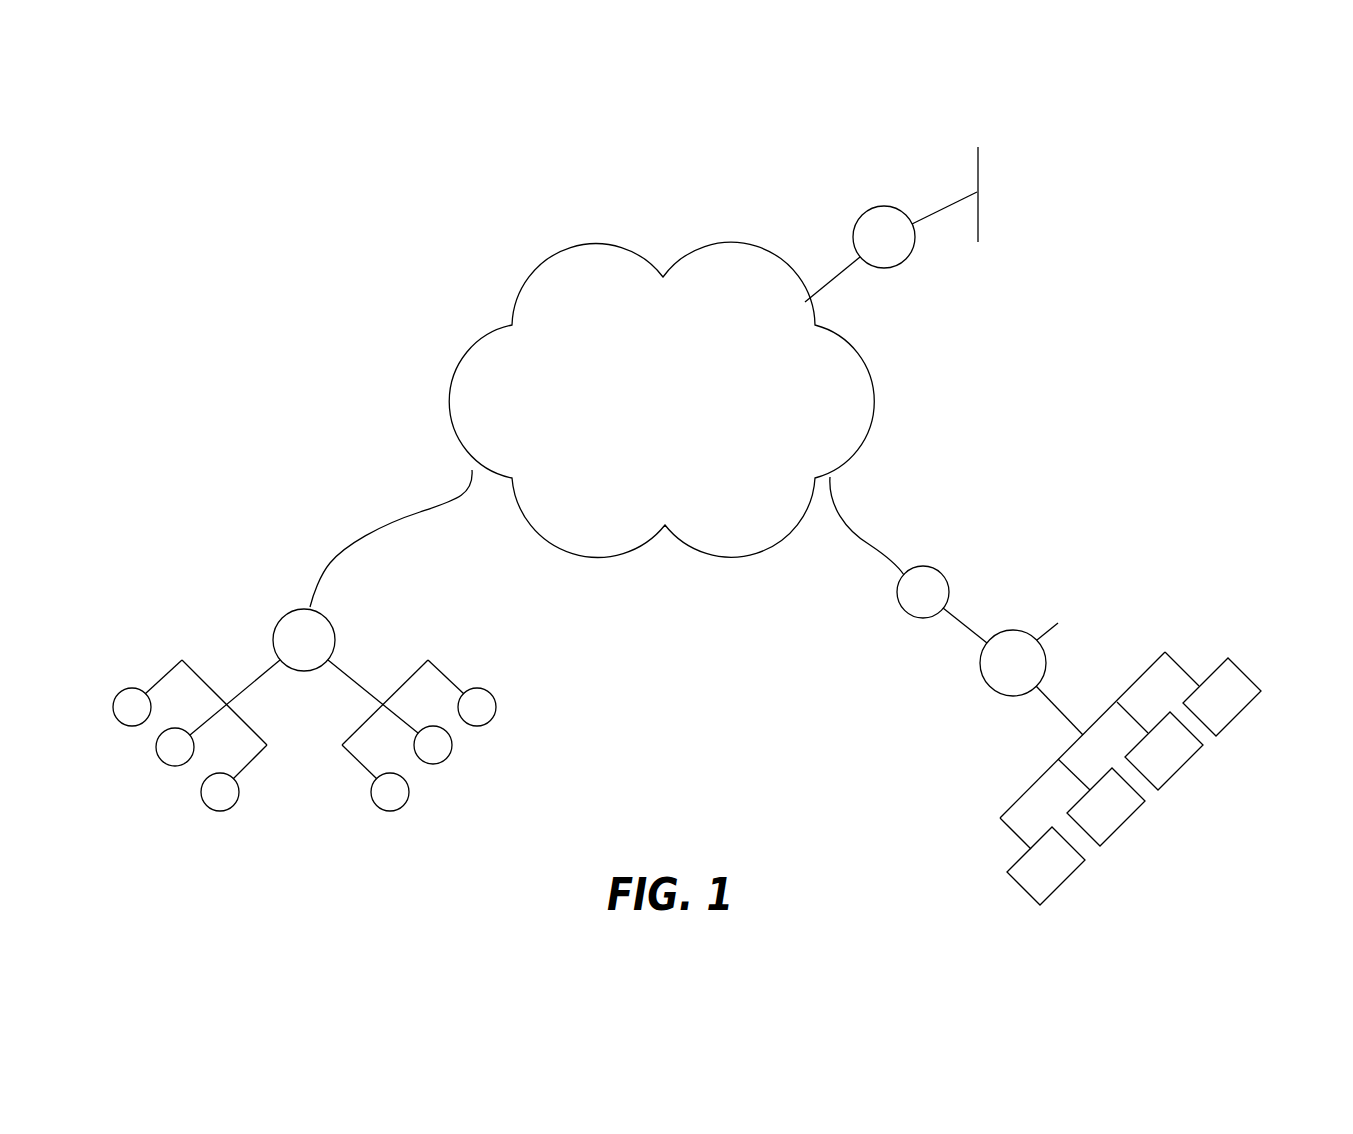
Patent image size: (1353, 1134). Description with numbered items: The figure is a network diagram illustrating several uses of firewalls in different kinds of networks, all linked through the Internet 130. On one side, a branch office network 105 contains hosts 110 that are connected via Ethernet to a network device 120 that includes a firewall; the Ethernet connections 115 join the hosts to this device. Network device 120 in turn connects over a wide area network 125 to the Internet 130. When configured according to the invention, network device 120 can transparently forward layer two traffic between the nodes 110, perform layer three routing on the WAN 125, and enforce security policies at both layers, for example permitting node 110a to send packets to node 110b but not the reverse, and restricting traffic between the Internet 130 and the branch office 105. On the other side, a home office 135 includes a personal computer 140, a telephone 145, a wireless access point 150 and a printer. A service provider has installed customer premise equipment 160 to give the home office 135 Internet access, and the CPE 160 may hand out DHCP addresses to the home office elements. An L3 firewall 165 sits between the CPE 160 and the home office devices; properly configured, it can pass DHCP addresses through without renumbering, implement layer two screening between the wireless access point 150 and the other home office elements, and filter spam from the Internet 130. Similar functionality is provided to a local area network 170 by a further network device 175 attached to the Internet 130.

The branch office network 105 is at (234, 605).
The hosts 110 is at (372, 820).
The node 110a is at (113, 706).
The node 110b is at (496, 706).
The Ethernet links 115 is at (370, 695).
The network device 120 is at (336, 640).
The wide area network 125 is at (320, 580).
The Internet 130 is at (613, 540).
The home office 135 is at (975, 775).
The personal computer 140 is at (1128, 805).
The telephone 145 is at (1070, 875).
The wireless access point 150 is at (1188, 745).
The customer premise equipment 160 is at (919, 575).
The L3 firewall 165 is at (1033, 671).
The local area network 170 is at (1042, 189).
The network device 175 is at (866, 206).